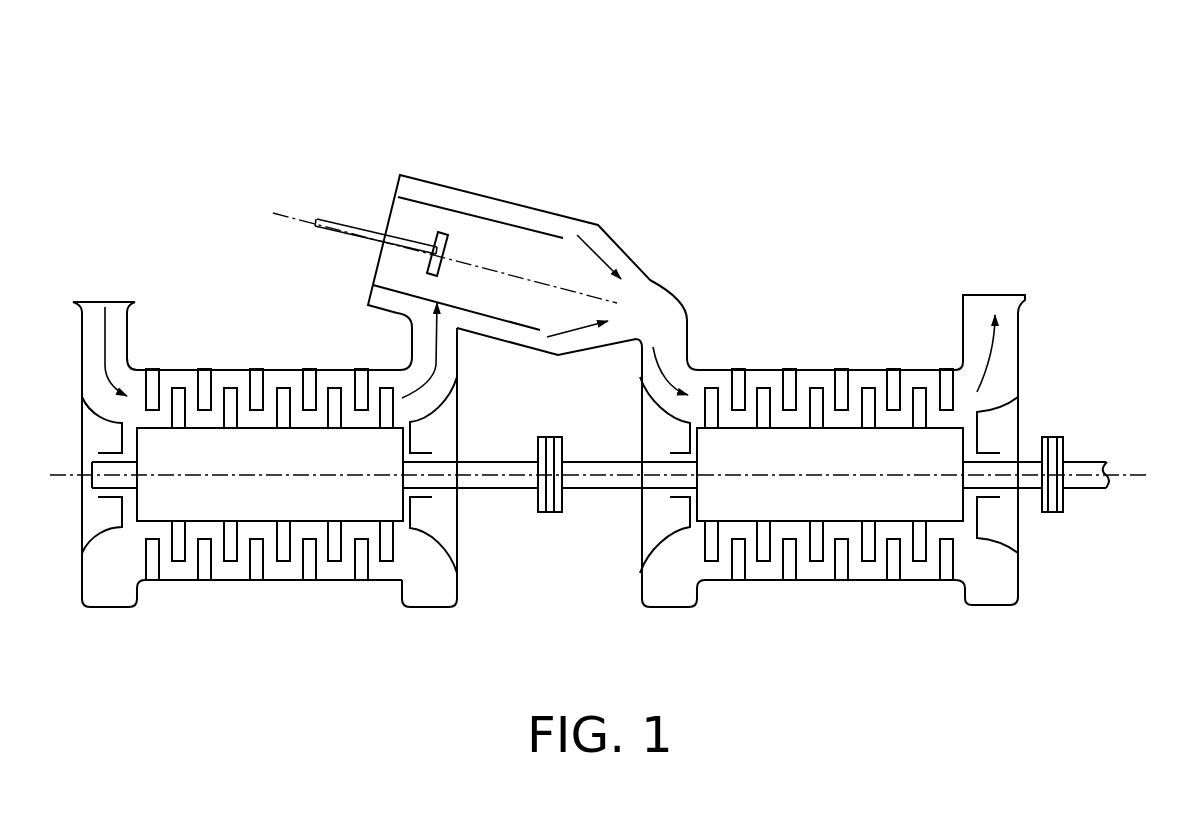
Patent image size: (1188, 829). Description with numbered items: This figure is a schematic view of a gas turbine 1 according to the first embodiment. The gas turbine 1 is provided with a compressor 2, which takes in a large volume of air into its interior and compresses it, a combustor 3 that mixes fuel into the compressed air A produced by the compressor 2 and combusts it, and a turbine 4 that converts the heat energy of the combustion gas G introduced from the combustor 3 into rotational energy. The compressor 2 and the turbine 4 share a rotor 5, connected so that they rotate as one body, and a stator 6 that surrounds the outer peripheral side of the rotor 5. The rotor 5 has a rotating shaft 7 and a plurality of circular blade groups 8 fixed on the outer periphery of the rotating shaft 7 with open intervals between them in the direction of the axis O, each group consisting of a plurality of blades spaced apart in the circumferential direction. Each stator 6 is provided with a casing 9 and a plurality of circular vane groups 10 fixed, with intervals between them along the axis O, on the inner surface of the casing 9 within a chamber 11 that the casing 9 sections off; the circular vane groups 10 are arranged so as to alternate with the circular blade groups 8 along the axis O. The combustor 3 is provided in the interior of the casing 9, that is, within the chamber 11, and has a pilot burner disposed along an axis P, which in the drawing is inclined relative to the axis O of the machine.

The gas turbine 1 is at (766, 121).
The compressor 2 is at (305, 501).
The combustor 3 is at (480, 241).
The turbine 4 is at (832, 481).
The rotor 5 is at (136, 535).
The stator 6 is at (415, 590).
The rotating shaft 7 is at (247, 497).
The circular blade groups 8 is at (762, 393).
The casing 9 is at (826, 582).
The circular vane groups 10 is at (740, 373).
The chamber 11 is at (462, 198).
The axis P is at (293, 210).
The compressed air A is at (432, 348).
The combustion gas G is at (653, 307).
The axis O is at (1128, 473).